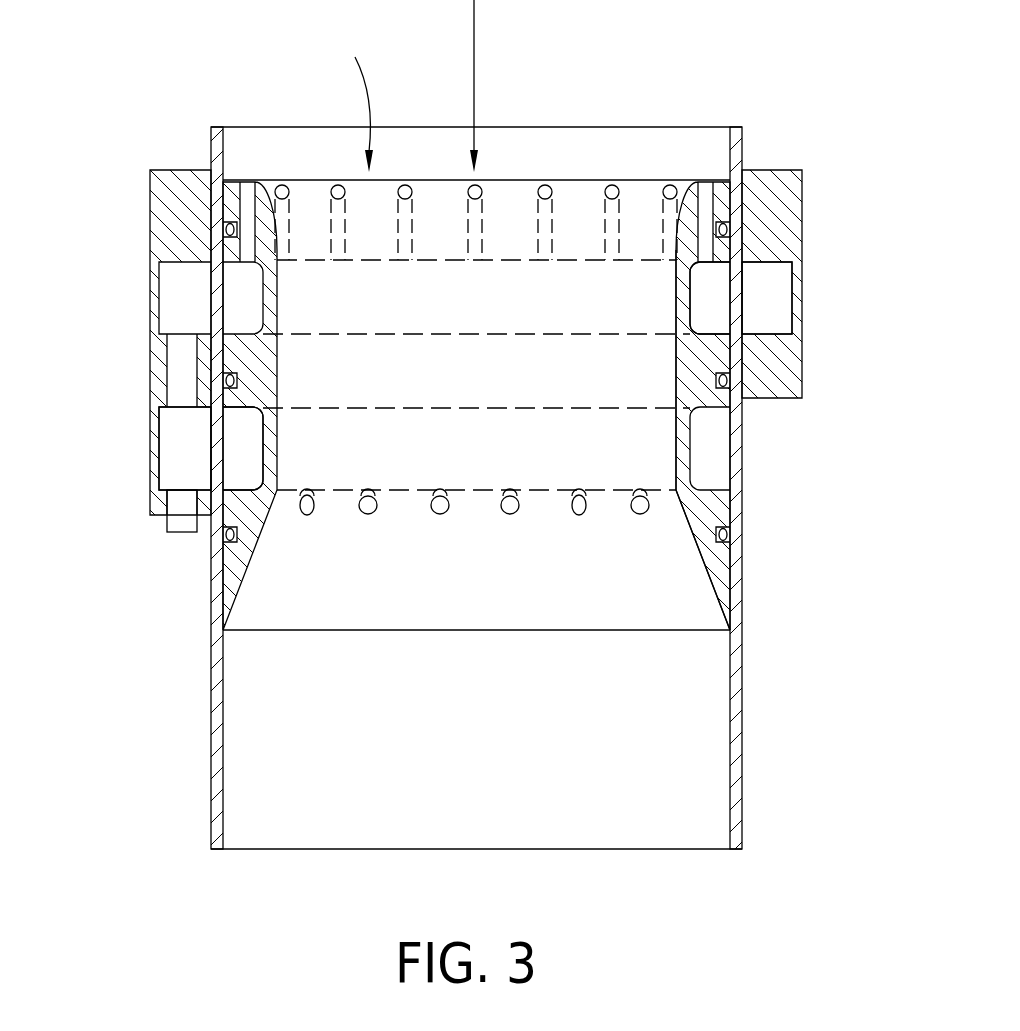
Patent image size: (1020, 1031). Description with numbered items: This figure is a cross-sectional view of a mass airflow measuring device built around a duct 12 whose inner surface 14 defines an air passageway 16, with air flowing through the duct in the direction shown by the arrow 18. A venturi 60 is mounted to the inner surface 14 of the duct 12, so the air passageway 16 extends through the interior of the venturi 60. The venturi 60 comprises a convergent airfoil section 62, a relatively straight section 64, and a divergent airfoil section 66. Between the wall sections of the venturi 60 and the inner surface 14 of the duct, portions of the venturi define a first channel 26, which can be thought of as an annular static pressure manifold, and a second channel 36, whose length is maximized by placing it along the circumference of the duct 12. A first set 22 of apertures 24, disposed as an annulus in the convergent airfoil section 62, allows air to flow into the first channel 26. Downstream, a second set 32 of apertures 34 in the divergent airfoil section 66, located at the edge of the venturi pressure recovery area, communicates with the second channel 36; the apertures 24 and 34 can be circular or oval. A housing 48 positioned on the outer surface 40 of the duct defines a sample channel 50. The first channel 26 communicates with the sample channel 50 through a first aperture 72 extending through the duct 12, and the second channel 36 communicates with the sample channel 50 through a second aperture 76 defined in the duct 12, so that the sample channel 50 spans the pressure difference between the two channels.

The duct 12 is at (207, 718).
The inner surface 14 is at (224, 157).
The air passageway 16 is at (263, 800).
The arrow 18 is at (476, 53).
The first set of apertures 22 is at (357, 102).
The apertures 24 is at (612, 188).
The first channel 26 is at (240, 302).
The second set of apertures 32 is at (380, 527).
The apertures 34 is at (511, 508).
The second channel 36 is at (175, 420).
The outer surface 40 is at (742, 715).
The housing 48 is at (802, 370).
The sample channel 50 is at (767, 284).
The venturi 60 is at (684, 545).
The convergent airfoil section 62 is at (686, 193).
The relatively straight section 64 is at (677, 350).
The divergent airfoil section 66 is at (226, 560).
The first aperture 72 is at (734, 322).
The second aperture 76 is at (222, 478).